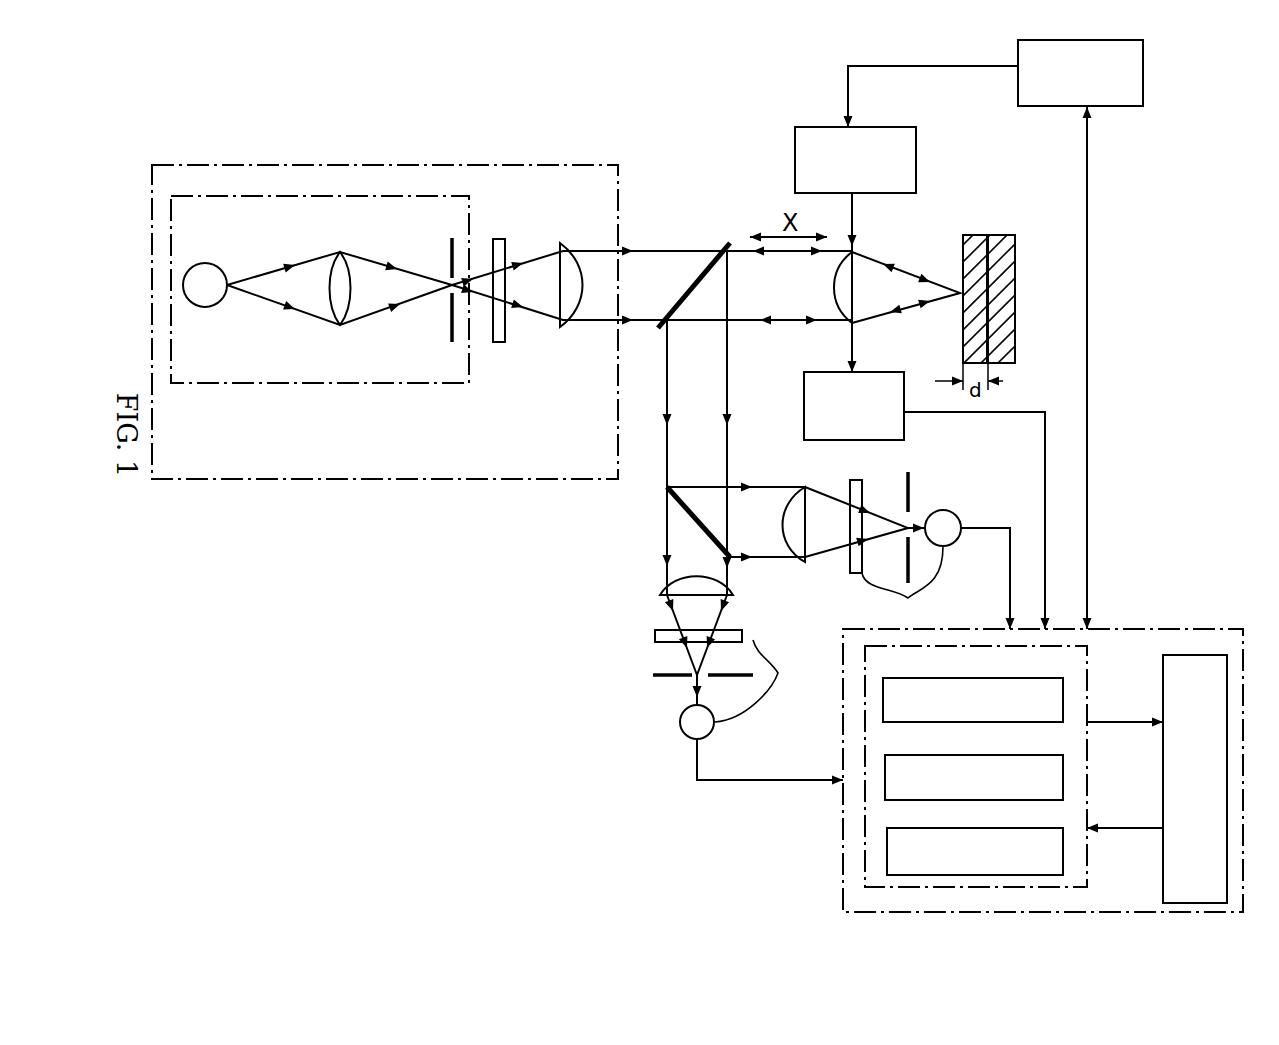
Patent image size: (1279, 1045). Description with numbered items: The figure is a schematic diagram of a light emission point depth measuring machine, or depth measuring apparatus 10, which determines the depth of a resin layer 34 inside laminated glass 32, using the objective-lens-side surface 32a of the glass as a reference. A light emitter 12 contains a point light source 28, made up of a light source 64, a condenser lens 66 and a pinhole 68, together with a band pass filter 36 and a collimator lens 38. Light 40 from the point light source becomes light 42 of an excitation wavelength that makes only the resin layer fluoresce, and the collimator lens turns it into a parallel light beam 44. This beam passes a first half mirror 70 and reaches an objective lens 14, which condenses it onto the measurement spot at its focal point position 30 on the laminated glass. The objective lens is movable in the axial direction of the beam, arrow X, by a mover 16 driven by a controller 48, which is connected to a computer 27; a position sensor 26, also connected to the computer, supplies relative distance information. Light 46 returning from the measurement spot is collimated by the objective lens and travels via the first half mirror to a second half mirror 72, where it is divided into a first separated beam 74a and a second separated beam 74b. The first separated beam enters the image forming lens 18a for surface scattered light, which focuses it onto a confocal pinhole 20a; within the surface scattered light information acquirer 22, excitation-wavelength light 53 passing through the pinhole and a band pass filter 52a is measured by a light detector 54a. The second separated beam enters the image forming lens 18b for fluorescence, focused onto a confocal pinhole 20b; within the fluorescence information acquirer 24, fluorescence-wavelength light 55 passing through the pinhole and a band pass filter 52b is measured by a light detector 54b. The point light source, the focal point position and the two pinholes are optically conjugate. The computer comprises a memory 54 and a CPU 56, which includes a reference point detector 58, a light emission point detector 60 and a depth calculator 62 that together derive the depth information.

The depth measuring apparatus 10 is at (356, 113).
The light emitter 12 is at (458, 166).
The objective lens 14 is at (836, 287).
The mover 16 is at (870, 126).
The image forming lens for detecting surface scattered light 18a is at (795, 482).
The image forming lens for detecting fluorescence 18b is at (660, 590).
The confocal pinhole for detecting surface scattered light 20a is at (909, 482).
The confocal pinhole for detecting fluorescence 20b is at (653, 675).
The surface scattered light information acquirer 22 is at (902, 585).
The fluorescence information acquirer 24 is at (770, 681).
The position sensor 26 is at (890, 350).
The computer 27 is at (1167, 627).
The point light source 28 is at (341, 384).
The focal point position 30 is at (962, 293).
The laminated glass 32 is at (1029, 252).
The surface of the laminated glass 32a is at (963, 240).
The resin layer 34 is at (988, 236).
The band pass filter 36 is at (499, 238).
The collimator lens 38 is at (563, 242).
The light 40 is at (490, 306).
The light having an excitation wavelength 42 is at (556, 324).
The parallel light beam 44 is at (591, 321).
The light from the measurement spot 46 is at (857, 258).
The controller 48 is at (1143, 77).
The band pass filter 52a is at (862, 480).
The band pass filter 52b is at (655, 637).
The light having a wavelength equal to an excitation wavelength 53 is at (913, 522).
The memory 54 is at (1163, 668).
The light detector 54a is at (957, 512).
The light detector 54b is at (680, 722).
The light having a wavelength equal to a fluorescence wavelength 55 is at (692, 687).
The CPU 56 is at (865, 843).
The reference point detector 58 is at (1010, 680).
The light emission point detector 60 is at (1012, 756).
The depth calculator 62 is at (1014, 830).
The light source 64 is at (205, 262).
The condenser lens 66 is at (340, 252).
The pinhole 68 is at (448, 246).
The first half mirror 70 is at (723, 245).
The second half mirror 72 is at (662, 488).
The first separated beam 74a is at (740, 482).
The second separated beam 74b is at (666, 545).